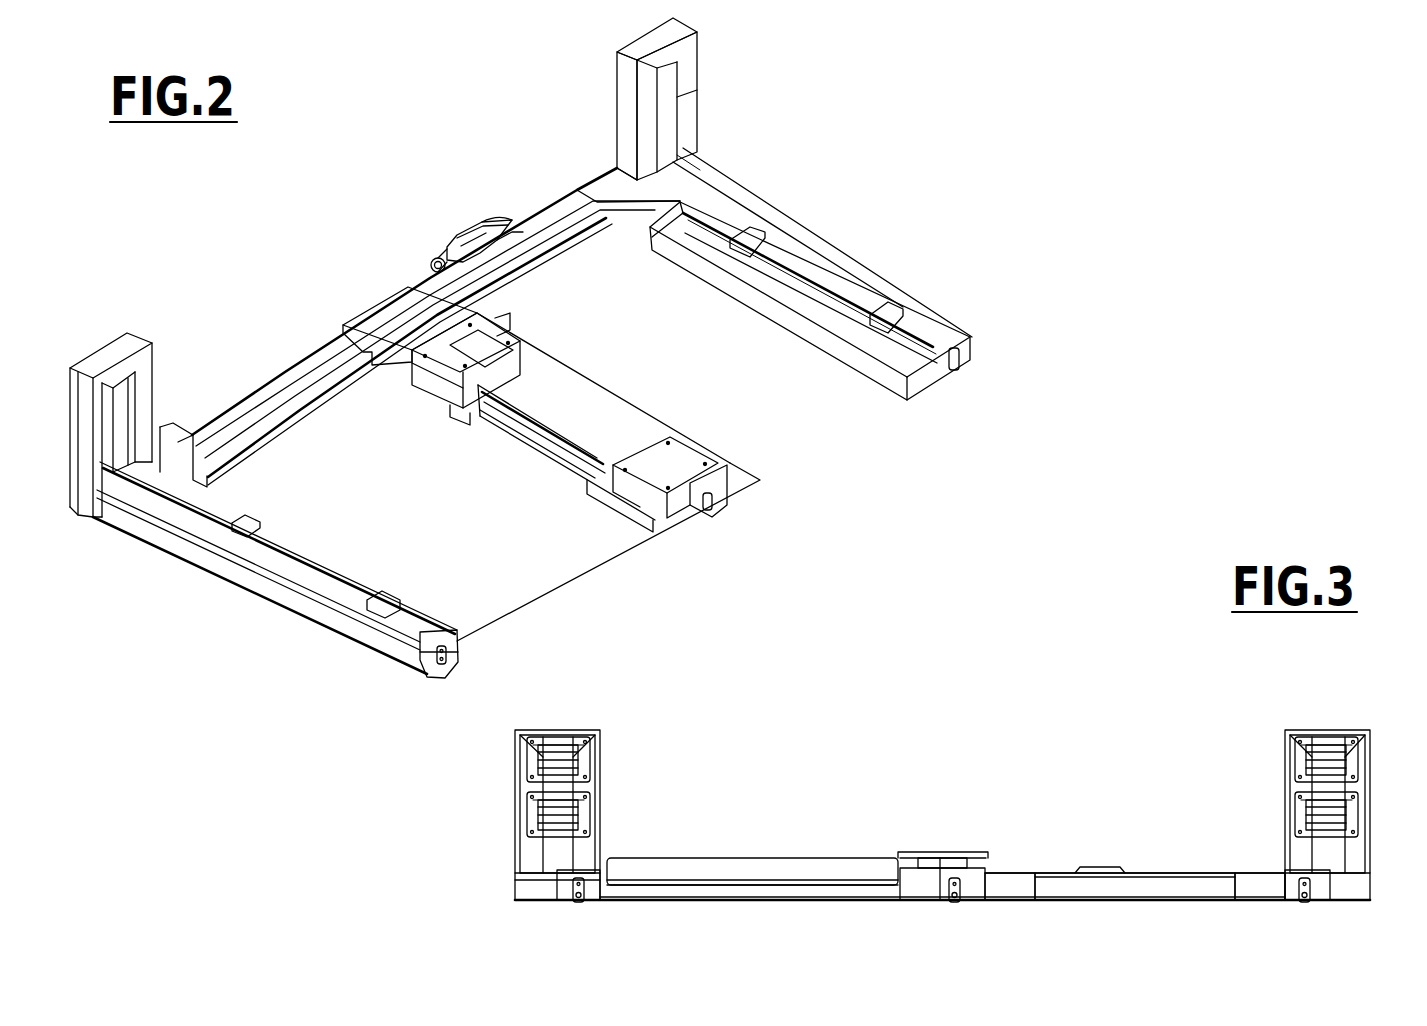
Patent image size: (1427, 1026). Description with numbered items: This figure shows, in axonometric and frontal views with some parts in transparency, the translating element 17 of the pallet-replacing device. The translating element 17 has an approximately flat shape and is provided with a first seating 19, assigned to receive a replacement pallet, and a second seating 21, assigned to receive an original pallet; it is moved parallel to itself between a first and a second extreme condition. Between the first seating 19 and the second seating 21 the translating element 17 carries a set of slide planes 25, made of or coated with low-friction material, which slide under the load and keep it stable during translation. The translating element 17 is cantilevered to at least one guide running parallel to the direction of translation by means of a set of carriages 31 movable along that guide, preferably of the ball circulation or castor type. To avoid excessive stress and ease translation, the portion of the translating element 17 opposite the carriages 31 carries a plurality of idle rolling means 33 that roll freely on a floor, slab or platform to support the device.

In FIG. 2, the translating element 17 is at (417, 333).
In FIG. 3, the translating element 17 is at (515, 822).
In FIG. 2, the first seating 19 is at (828, 328).
In FIG. 3, the first seating 19 is at (1015, 900).
In FIG. 2, the second seating 21 is at (412, 510).
In FIG. 3, the second seating 21 is at (763, 885).
In FIG. 2, the slide planes 25 is at (465, 348).
In FIG. 3, the slide planes 25 is at (950, 868).
In FIG. 2, the carriages 31 is at (163, 366).
In FIG. 3, the carriages 31 is at (590, 792).
In FIG. 2, the idle rolling means 33 is at (420, 657).
In FIG. 3, the idle rolling means 33 is at (1306, 902).